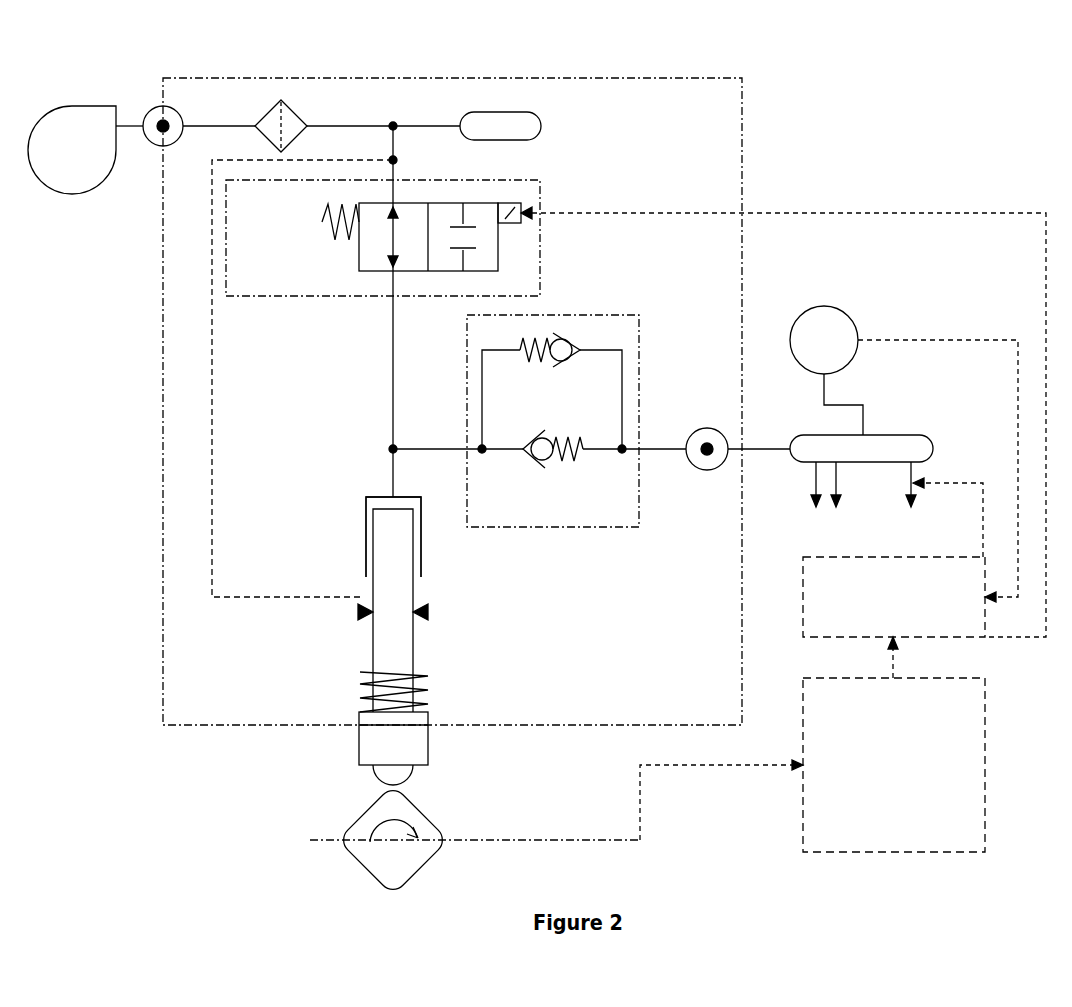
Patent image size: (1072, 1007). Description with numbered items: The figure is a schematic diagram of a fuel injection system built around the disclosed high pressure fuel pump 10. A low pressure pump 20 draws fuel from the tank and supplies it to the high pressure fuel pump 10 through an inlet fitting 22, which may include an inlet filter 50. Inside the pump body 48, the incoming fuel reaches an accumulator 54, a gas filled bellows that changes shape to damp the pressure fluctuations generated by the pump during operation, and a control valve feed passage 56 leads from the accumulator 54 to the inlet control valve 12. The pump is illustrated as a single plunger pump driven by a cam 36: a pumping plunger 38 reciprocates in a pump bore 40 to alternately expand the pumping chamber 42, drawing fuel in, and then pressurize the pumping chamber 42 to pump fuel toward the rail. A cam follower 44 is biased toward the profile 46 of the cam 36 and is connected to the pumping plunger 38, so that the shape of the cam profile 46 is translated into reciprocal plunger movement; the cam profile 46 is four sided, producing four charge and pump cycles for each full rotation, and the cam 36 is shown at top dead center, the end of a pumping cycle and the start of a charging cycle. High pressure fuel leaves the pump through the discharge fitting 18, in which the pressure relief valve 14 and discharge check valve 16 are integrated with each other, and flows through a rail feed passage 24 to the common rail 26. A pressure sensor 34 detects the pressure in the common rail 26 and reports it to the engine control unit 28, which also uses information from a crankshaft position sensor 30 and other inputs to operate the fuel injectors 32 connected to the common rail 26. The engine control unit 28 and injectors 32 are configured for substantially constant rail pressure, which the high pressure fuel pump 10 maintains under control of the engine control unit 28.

The high pressure fuel pump 10 is at (742, 178).
The inlet control valve 12 is at (540, 252).
The pressure relief valve 14 is at (568, 337).
The discharge check valve 16 is at (545, 470).
The discharge fitting 18 is at (705, 471).
The low pressure pump 20 is at (86, 165).
The inlet fitting 22 is at (150, 106).
The rail feed passage 24 is at (760, 448).
The common rail 26 is at (872, 430).
The engine control unit 28 is at (894, 597).
The crankshaft position sensor 30 is at (894, 744).
The fuel injectors 32 is at (897, 509).
The pressure sensor 34 is at (890, 438).
The cam 36 is at (510, 837).
The pumping plunger 38 is at (405, 640).
The pump bore 40 is at (362, 545).
The pumping chamber 42 is at (372, 500).
The cam follower 44 is at (358, 748).
The cam profile 46 is at (336, 820).
The pump body 48 is at (212, 432).
The inlet filter 50 is at (281, 100).
The accumulator 54 is at (518, 118).
The control valve feed passage 56 is at (395, 176).